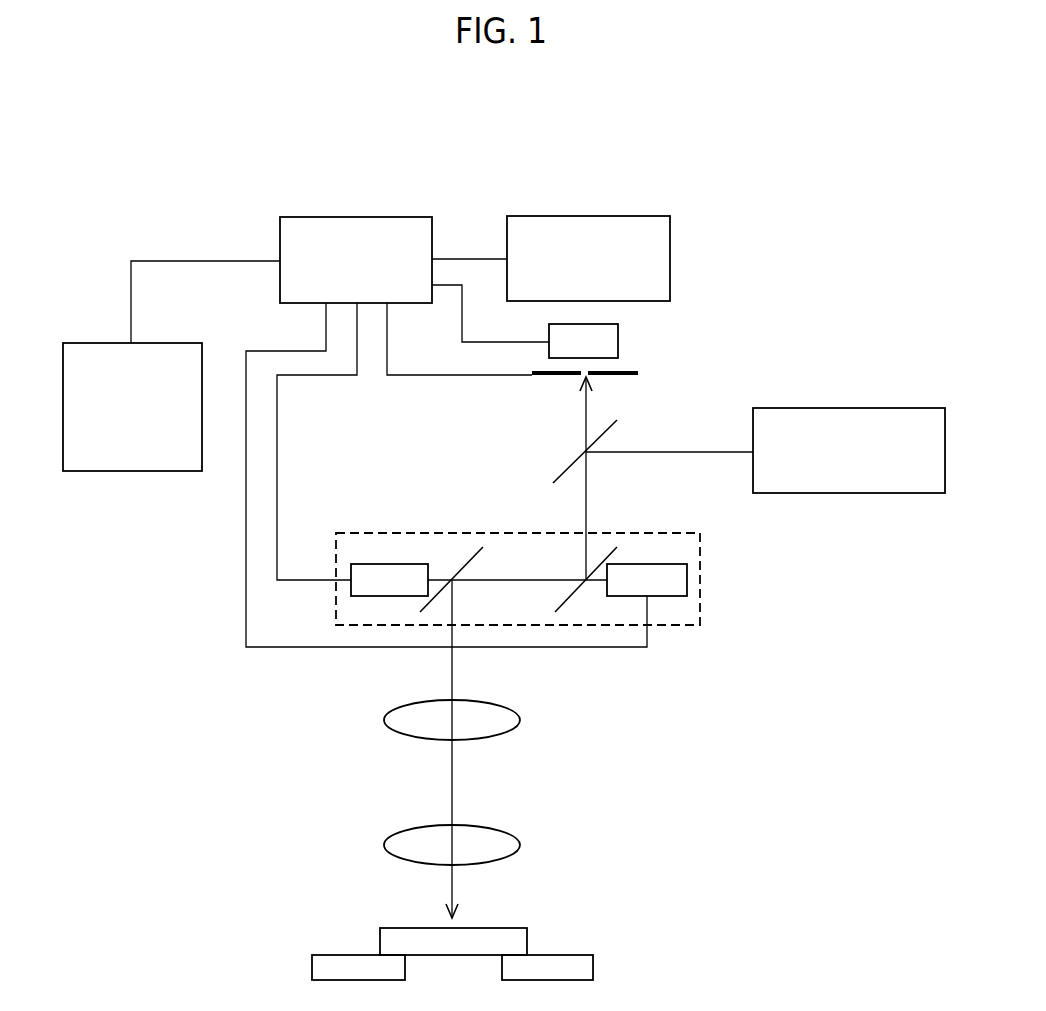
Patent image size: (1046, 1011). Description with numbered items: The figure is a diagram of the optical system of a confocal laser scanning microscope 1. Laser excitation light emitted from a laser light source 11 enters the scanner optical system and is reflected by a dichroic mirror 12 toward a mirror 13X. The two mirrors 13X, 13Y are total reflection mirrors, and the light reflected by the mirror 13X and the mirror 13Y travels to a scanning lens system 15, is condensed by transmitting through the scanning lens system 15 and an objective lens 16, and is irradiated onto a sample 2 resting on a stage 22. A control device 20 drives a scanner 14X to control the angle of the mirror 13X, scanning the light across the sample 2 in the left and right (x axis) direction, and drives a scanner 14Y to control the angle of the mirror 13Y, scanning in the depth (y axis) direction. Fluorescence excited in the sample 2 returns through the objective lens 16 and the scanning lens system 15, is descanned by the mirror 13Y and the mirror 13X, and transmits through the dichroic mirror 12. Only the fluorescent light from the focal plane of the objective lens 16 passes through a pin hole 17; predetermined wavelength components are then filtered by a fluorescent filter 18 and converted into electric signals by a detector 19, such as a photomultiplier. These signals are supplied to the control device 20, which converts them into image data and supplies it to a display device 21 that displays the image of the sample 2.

The confocal laser scanning microscope 1 is at (793, 192).
The sample 2 is at (527, 940).
The laser light source 11 is at (853, 408).
The dichroic mirror 12 is at (612, 424).
The mirror 13X is at (607, 548).
The mirror 13Y is at (465, 558).
The scanner 14X is at (687, 578).
The scanner 14Y is at (392, 564).
The scanning lens system 15 is at (520, 720).
The objective lens 16 is at (520, 845).
The pin hole 17 is at (640, 372).
The fluorescent filter 18 is at (618, 342).
The detector 19 is at (593, 216).
The control device 20 is at (360, 217).
The display device 21 is at (133, 471).
The stage 22 is at (593, 968).